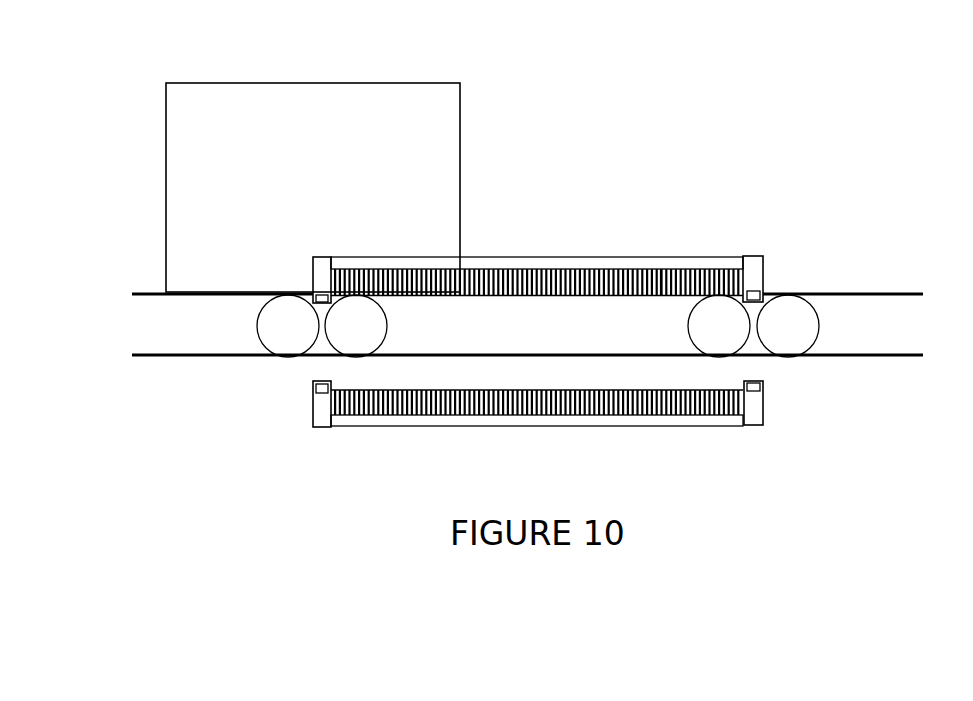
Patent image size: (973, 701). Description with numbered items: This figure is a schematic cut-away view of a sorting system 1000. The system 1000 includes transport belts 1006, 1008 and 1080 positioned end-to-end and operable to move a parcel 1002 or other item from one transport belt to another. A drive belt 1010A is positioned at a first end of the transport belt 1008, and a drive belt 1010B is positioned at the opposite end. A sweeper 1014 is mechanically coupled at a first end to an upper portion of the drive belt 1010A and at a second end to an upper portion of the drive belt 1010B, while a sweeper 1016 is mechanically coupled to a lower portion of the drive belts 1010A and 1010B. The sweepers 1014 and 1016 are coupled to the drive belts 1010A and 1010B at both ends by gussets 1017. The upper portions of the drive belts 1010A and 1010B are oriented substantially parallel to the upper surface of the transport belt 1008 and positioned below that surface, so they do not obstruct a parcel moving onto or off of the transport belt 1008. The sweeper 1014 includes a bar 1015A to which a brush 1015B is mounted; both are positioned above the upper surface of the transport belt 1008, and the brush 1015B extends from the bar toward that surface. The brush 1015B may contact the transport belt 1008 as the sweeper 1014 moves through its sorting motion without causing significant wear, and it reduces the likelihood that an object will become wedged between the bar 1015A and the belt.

The sorting system 1000 is at (735, 76).
The parcel 1002 is at (341, 199).
The transport belt 1006 is at (228, 357).
The transport belt 1008 is at (490, 354).
The drive belt 1010A is at (763, 293).
The drive belt 1010B is at (313, 293).
The sweeper 1014 is at (512, 257).
The bar 1015A is at (648, 257).
The brush 1015B is at (661, 290).
The sweeper 1016 is at (565, 427).
The gussets 1017 is at (322, 428).
The transport belt 1080 is at (838, 357).